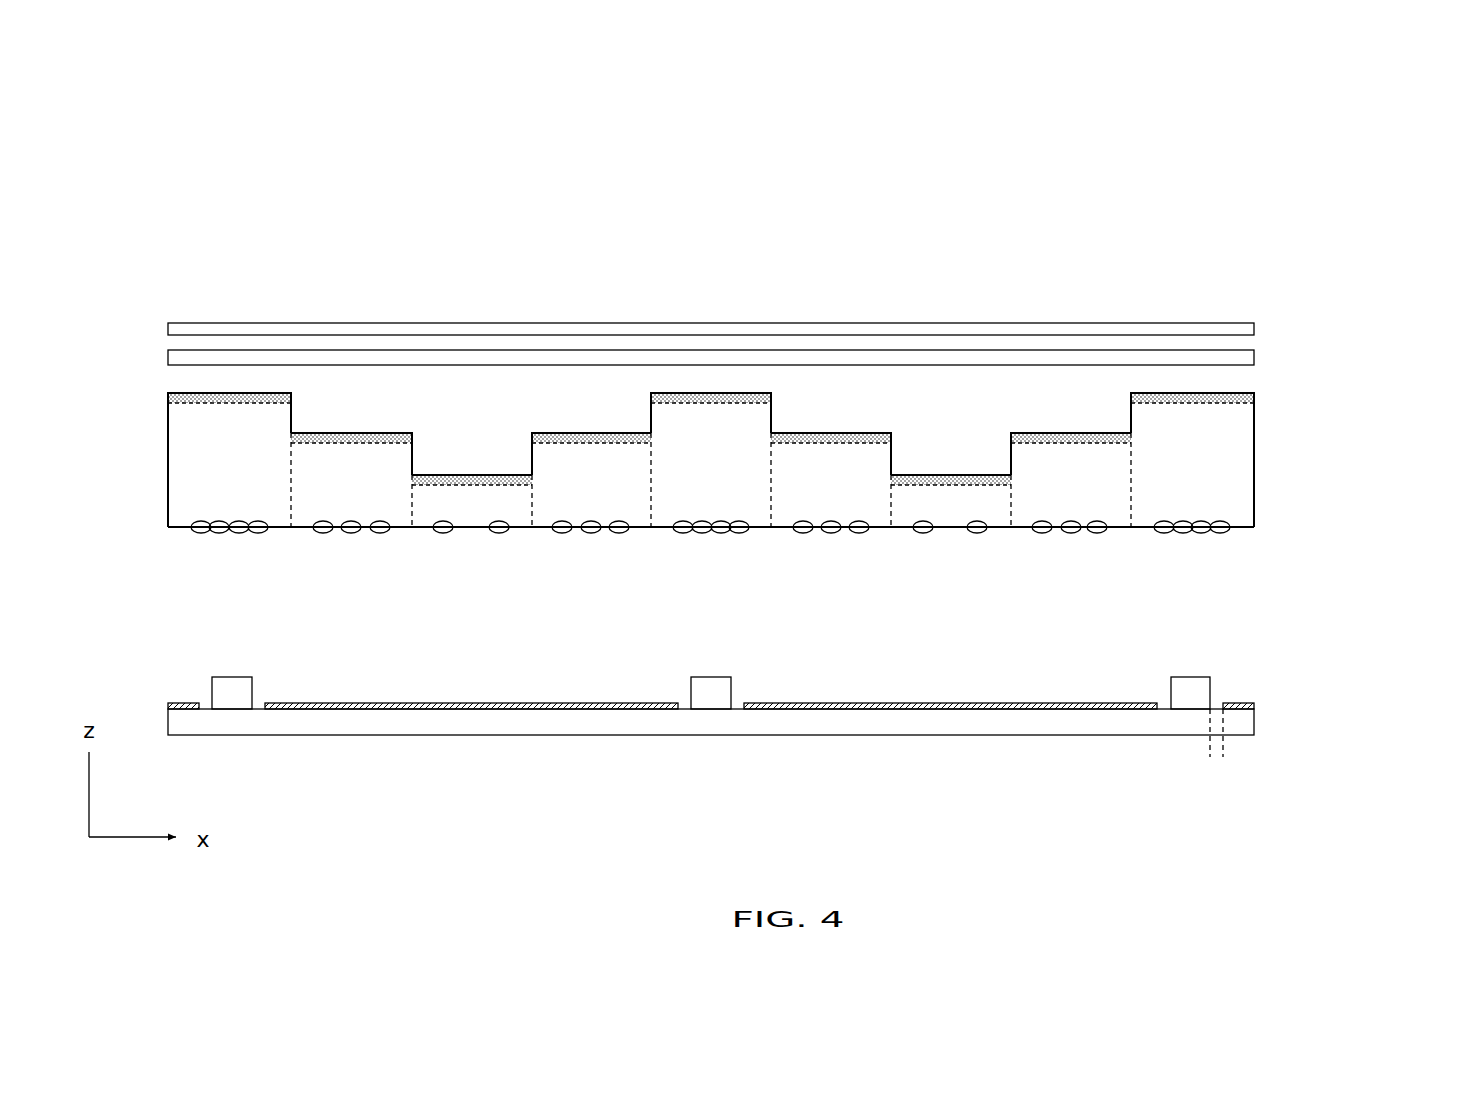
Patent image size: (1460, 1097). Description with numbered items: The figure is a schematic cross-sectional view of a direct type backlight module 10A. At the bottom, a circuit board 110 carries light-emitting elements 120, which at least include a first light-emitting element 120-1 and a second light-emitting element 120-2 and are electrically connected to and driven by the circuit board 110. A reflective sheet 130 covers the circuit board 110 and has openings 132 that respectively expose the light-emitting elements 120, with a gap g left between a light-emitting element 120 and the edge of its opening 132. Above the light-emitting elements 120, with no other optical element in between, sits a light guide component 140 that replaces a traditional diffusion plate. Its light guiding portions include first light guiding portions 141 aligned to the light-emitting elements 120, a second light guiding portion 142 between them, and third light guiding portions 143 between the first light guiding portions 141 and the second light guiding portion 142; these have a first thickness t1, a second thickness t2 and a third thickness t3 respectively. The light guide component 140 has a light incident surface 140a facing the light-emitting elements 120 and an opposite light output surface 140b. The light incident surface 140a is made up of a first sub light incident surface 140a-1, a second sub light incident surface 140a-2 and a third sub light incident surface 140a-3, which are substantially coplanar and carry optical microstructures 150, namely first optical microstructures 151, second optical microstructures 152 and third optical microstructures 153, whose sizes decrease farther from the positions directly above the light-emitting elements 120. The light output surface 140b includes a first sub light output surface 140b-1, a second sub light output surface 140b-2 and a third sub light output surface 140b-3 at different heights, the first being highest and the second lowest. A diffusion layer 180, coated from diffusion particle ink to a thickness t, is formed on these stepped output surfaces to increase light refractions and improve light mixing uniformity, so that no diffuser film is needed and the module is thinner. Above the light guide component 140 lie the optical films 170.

The circuit board 110 is at (1240, 722).
The light-emitting elements 120 is at (420, 75).
The first light-emitting element 120-1 is at (1180, 690).
The second light-emitting element 120-2 is at (700, 692).
The reflective sheet 130 is at (1254, 704).
The openings 132 is at (1218, 706).
The light guide component 140 is at (612, 75).
The light incident surface 140a is at (805, 75).
The first sub light incident surface 140a-1 is at (758, 530).
The second sub light incident surface 140a-2 is at (998, 530).
The third sub light incident surface 140a-3 is at (878, 530).
The light output surface 140b is at (1030, 75).
The first sub light output surface 140b-1 is at (670, 393).
The second sub light output surface 140b-2 is at (920, 475).
The third sub light output surface 140b-3 is at (800, 433).
The first light guiding portion 141 is at (737, 420).
The second light guiding portion 142 is at (972, 498).
The third light guiding portion 143 is at (854, 457).
The optical microstructures 150 is at (1241, 75).
The first optical microstructures 151 is at (739, 534).
The second optical microstructures 152 is at (977, 534).
The third optical microstructures 153 is at (859, 534).
The optical film 170 is at (1254, 329).
The diffusion layer 180 is at (1243, 393).
The backlight module 10A is at (1400, 840).
The thickness t is at (1217, 372).
The first thickness t1 is at (1131, 402).
The second thickness t2 is at (891, 483).
The third thickness t3 is at (1011, 442).
The gap g is at (1190, 751).